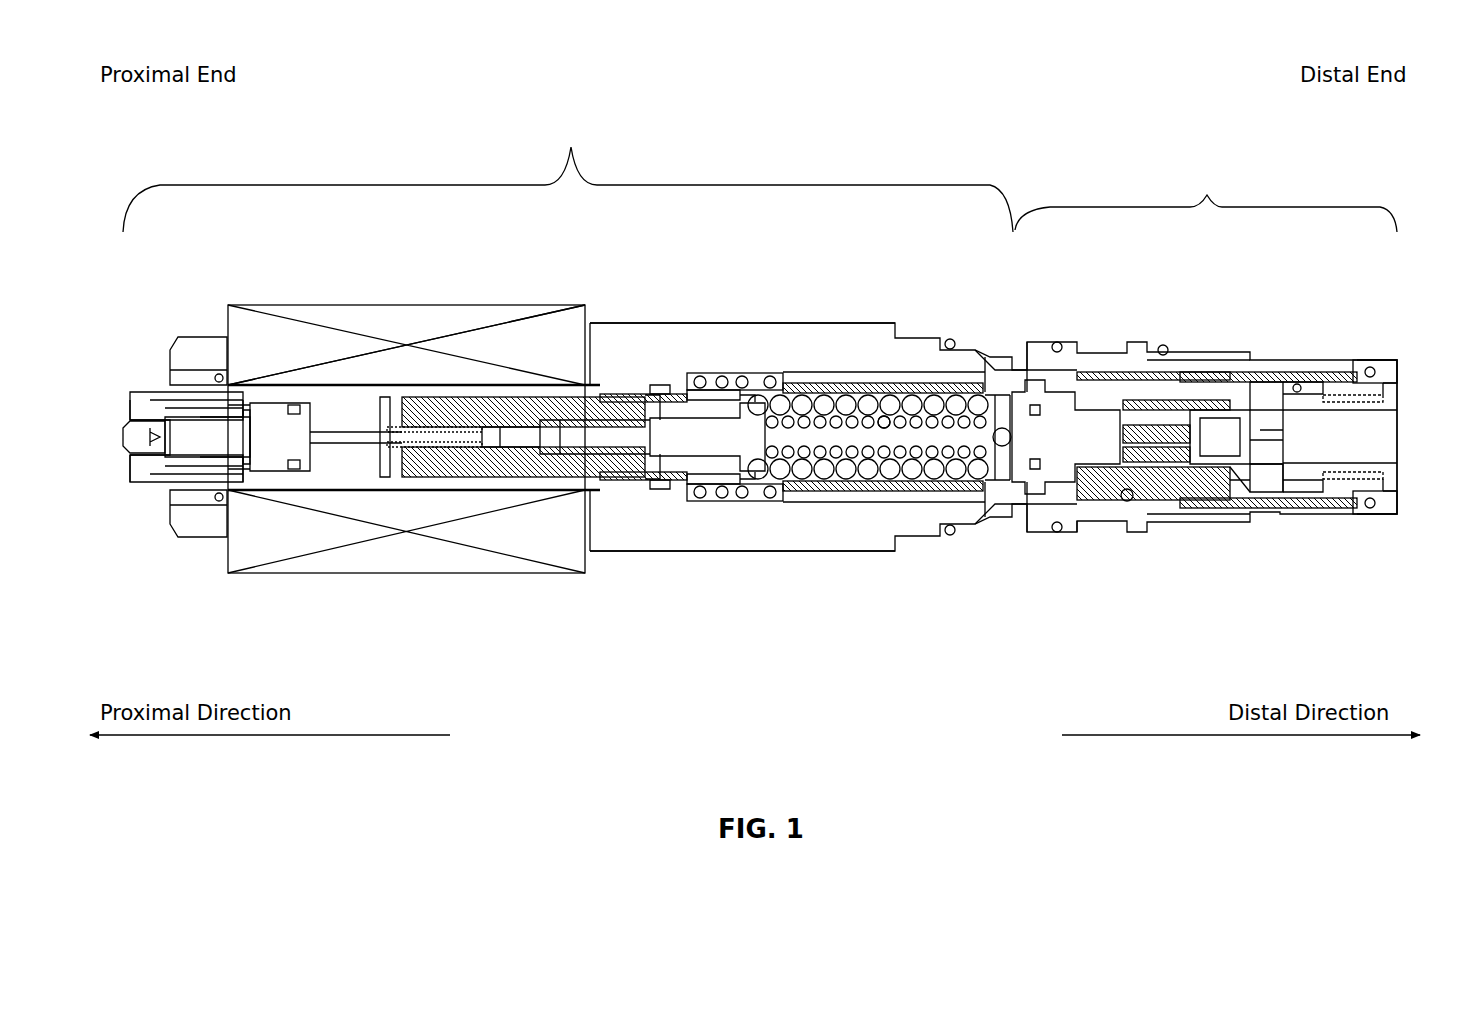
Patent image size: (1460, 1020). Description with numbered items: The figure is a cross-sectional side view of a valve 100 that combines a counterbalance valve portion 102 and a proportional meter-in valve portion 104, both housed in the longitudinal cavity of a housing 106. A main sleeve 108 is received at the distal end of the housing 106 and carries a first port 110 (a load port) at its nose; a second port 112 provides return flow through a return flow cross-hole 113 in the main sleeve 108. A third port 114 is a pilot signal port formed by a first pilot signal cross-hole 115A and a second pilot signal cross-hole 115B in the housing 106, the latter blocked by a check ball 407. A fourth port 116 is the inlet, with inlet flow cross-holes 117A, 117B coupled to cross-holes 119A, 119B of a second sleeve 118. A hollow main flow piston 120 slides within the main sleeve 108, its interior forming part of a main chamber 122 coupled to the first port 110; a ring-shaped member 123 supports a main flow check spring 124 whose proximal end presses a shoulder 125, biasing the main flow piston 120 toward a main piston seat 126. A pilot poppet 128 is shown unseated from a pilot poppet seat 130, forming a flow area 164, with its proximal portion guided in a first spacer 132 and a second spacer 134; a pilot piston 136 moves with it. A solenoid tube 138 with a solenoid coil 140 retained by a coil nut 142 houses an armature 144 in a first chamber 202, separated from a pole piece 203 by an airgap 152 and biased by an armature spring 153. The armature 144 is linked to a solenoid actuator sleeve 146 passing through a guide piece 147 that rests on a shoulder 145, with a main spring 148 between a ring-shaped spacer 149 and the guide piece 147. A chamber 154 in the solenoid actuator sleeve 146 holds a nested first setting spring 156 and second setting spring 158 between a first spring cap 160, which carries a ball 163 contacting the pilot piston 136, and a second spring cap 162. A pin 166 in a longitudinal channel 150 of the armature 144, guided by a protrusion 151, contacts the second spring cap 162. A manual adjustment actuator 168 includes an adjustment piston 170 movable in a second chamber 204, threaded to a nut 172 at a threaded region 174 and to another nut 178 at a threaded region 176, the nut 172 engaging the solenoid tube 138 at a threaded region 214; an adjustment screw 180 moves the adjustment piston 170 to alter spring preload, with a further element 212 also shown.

The valve 100 is at (138, 185).
The counterbalance valve portion 102 is at (1205, 197).
The meter-in valve portion 104 is at (571, 147).
The housing 106 is at (610, 350).
The main sleeve 108 is at (1345, 367).
The first port 110 is at (1400, 447).
The second port 112 is at (1340, 515).
The return flow cross-hole 113 is at (1263, 449).
The third port 114 is at (1088, 538).
The first pilot signal cross-hole 115A is at (1080, 400).
The second pilot signal cross-hole 115B is at (1125, 492).
The fourth port 116 is at (982, 330).
The inlet flow cross-hole 117A is at (993, 356).
The inlet flow cross-hole 117B is at (998, 518).
The second sleeve 118 is at (862, 376).
The cross-hole 119A is at (950, 342).
The cross-hole 119B is at (973, 498).
The main flow piston 120 is at (1180, 410).
The main chamber 122 is at (1308, 458).
The ring-shaped member 123 is at (1390, 377).
The main flow check spring 124 is at (1365, 478).
The shoulder 125 is at (1305, 396).
The main piston seat 126 is at (1275, 475).
The pilot poppet 128 is at (1245, 449).
The pilot poppet seat 130 is at (1267, 408).
The first spacer 132 is at (1180, 425).
The second spacer 134 is at (1150, 420).
The pilot piston 136 is at (1027, 448).
The solenoid tube 138 is at (480, 380).
The solenoid coil 140 is at (325, 300).
The coil nut 142 is at (185, 337).
The armature 144 is at (542, 405).
The shoulder 145 is at (666, 376).
The solenoid actuator sleeve 146 is at (708, 396).
The guide piece 147 is at (683, 376).
The main spring 148 is at (742, 378).
The ring-shaped spacer 149 is at (777, 381).
The longitudinal channel 150 is at (527, 417).
The protrusion 151 is at (507, 417).
The airgap 152 is at (393, 482).
The armature spring 153 is at (443, 452).
The chamber 154 is at (862, 444).
The first setting spring 156 is at (917, 400).
The second setting spring 158 is at (887, 420).
The first spring cap 160 is at (1003, 432).
The second spring cap 162 is at (690, 445).
The ball 163 is at (985, 428).
The flow area 164 is at (1258, 465).
The pin 166 is at (487, 437).
The manual adjustment actuator 168 is at (142, 382).
The adjustment piston 170 is at (263, 430).
The nut 172 is at (235, 405).
The threaded region 174 is at (202, 464).
The threaded region 176 is at (130, 417).
The nut 178 is at (147, 470).
The adjustment screw 180 is at (120, 430).
The first chamber 202 is at (393, 392).
The pole piece 203 is at (348, 478).
The second chamber 204 is at (263, 472).
The fastener 212 is at (208, 368).
The threaded region 214 is at (215, 482).
The check ball 407 is at (1127, 500).